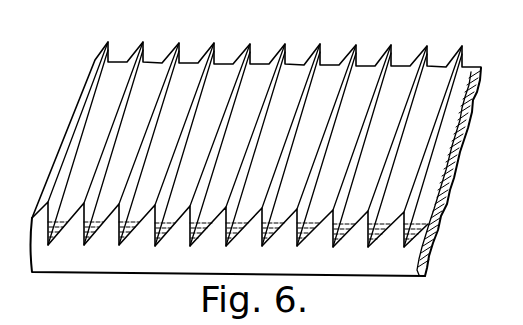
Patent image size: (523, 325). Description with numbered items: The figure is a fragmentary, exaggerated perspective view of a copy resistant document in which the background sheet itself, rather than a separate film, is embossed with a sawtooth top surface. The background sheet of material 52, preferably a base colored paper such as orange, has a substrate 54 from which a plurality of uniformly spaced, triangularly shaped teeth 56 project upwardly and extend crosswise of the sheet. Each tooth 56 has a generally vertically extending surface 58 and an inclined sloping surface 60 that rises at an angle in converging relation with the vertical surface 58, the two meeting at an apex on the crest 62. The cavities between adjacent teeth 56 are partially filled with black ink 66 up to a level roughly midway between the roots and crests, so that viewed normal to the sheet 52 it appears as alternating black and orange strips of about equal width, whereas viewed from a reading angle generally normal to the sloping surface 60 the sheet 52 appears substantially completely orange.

The background sheet of material 52 is at (465, 206).
The substrate 54 is at (125, 262).
The teeth 56 is at (463, 45).
The vertically extending surface 58 is at (110, 41).
The inclined sloping surface 60 is at (115, 157).
The crest 62 is at (285, 164).
The black ink 66 is at (117, 60).